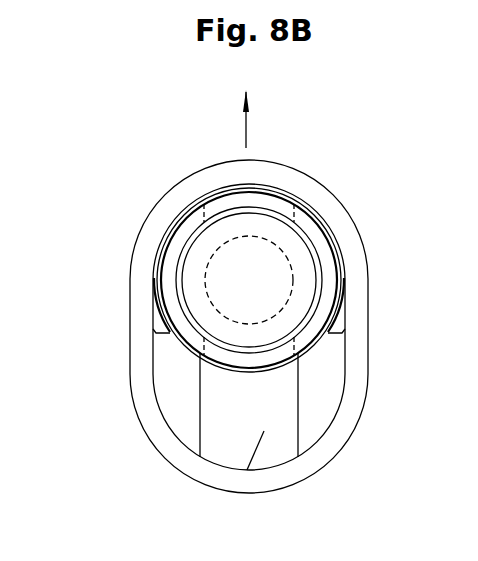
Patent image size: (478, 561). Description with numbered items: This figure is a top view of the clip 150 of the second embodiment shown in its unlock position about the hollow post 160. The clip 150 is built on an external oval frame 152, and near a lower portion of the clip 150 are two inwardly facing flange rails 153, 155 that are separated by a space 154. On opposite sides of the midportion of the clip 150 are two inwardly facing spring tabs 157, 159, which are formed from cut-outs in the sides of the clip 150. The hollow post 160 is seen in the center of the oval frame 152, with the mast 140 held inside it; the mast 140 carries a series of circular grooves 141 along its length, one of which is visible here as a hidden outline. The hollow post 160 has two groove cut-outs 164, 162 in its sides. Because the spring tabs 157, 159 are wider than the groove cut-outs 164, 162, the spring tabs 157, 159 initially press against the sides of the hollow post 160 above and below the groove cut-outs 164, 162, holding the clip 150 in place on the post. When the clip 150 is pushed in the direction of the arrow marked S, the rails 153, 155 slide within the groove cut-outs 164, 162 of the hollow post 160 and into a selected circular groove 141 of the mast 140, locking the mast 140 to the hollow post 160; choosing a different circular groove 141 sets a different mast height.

The clip 150 is at (117, 220).
The external oval frame 152 is at (195, 470).
The flange rail 153 is at (188, 413).
The flange rail 155 is at (315, 417).
The space 154 is at (264, 431).
The spring tab 157 is at (158, 327).
The spring tab 159 is at (341, 326).
The hollow post 160 is at (287, 208).
The groove cut-out 162 is at (333, 285).
The groove cut-out 164 is at (188, 230).
The circular groove 141 is at (300, 262).
The mast 140 is at (236, 291).